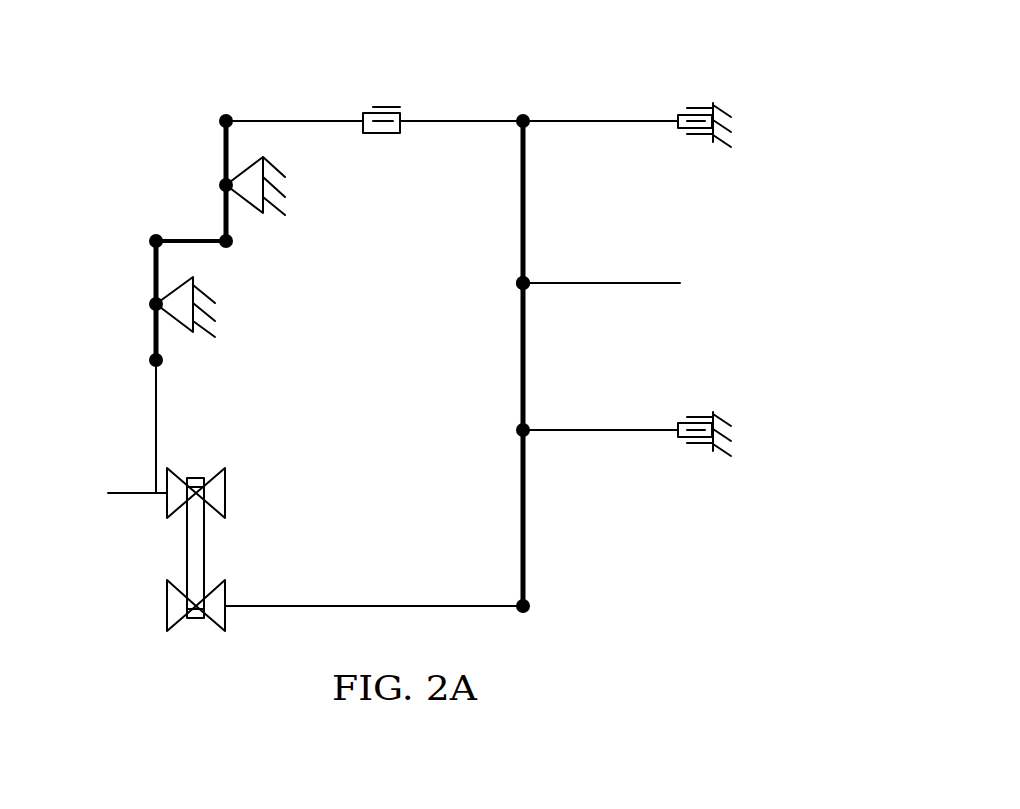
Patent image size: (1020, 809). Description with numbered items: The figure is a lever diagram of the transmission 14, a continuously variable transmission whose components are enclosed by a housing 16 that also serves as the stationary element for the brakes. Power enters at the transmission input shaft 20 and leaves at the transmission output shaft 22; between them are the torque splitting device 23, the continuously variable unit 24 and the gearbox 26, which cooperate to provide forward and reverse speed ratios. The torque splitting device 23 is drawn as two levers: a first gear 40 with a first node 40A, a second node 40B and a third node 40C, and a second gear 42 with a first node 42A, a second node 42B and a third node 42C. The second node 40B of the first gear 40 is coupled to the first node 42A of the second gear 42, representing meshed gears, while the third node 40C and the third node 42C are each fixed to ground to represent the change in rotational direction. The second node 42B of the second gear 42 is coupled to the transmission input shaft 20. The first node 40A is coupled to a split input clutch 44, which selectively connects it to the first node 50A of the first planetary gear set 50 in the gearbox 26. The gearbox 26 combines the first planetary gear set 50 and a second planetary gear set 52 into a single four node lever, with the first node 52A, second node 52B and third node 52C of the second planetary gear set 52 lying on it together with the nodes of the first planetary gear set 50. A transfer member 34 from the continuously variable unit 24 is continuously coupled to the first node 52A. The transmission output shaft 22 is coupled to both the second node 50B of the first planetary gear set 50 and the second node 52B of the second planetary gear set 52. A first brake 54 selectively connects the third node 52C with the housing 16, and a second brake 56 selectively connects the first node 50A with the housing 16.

The transmission 14 is at (770, 58).
The transmission housing 16 is at (724, 108).
The transmission input shaft 20 is at (122, 495).
The transmission output shaft 22 is at (658, 285).
The torque splitting device 23 is at (148, 170).
The continuously variable unit 24 is at (204, 452).
The gearbox 26 is at (416, 104).
The transfer member 34 is at (272, 606).
The first gear 40 is at (196, 118).
The first node of the first gear 40A is at (231, 118).
The second node of the first gear 40B is at (234, 242).
The third node of the first gear 40C is at (220, 185).
The second gear 42 is at (100, 284).
The first node of the second gear 42A is at (156, 236).
The second node of the second gear 42B is at (150, 362).
The third node of the second gear 42C is at (150, 306).
The split input clutch 44 is at (383, 134).
The first planetary gear set 50 is at (494, 132).
The first node of the first planetary gear set 50A is at (525, 117).
The second node of the first planetary gear set 50B is at (447, 296).
The second planetary gear set 52 is at (548, 560).
The first node of the second planetary gear set 52A is at (531, 608).
The second node of the second planetary gear set 52B is at (516, 284).
The third node of the second planetary gear set 52C is at (516, 428).
The first brake 54 is at (698, 446).
The second brake 56 is at (695, 136).